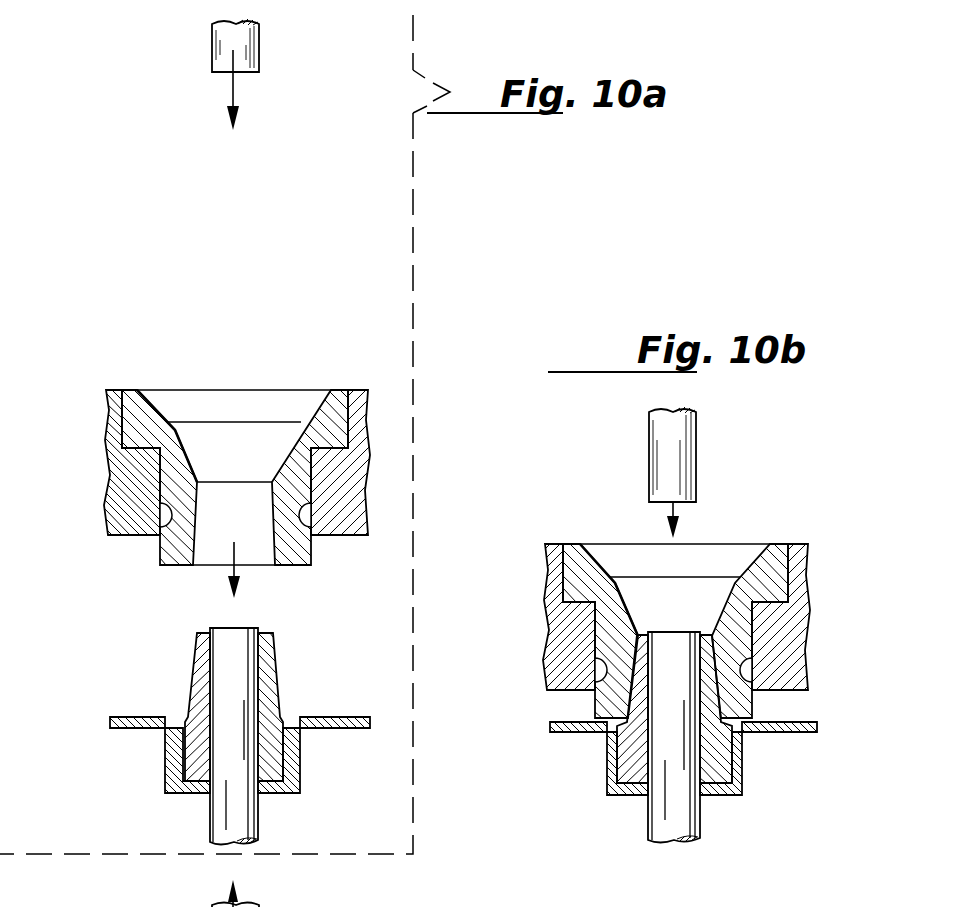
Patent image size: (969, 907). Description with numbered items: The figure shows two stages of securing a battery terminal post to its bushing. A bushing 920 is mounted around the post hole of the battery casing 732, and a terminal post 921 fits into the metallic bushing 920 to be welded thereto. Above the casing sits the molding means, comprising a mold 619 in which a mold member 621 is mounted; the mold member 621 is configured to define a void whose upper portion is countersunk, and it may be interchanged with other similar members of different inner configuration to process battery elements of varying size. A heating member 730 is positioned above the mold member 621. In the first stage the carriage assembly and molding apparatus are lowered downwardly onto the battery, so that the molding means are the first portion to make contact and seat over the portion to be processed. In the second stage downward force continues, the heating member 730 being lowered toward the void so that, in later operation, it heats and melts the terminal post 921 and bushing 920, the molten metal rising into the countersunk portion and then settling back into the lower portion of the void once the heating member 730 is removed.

In FIG. 10A, the heating member 730 is at (243, 52).
In FIG. 10B, the heating member 730 is at (685, 470).
In FIG. 10A, the mold member 621 is at (142, 412).
In FIG. 10B, the mold member 621 is at (772, 562).
In FIG. 10A, the mold 619 is at (132, 520).
In FIG. 10B, the mold 619 is at (568, 653).
In FIG. 10A, the bushing 920 is at (270, 678).
In FIG. 10B, the bushing 920 is at (737, 780).
In FIG. 10A, the battery casing 732 is at (133, 723).
In FIG. 10B, the battery casing 732 is at (783, 732).
In FIG. 10A, the terminal post 921 is at (243, 817).
In FIG. 10B, the terminal post 921 is at (670, 830).